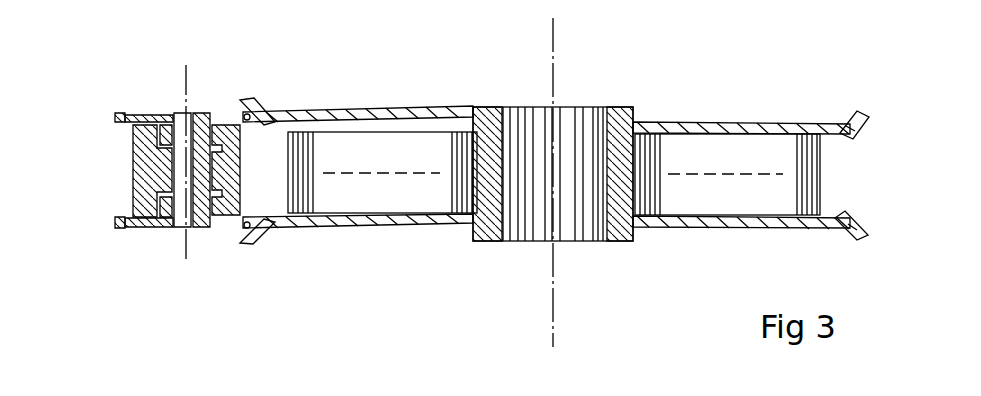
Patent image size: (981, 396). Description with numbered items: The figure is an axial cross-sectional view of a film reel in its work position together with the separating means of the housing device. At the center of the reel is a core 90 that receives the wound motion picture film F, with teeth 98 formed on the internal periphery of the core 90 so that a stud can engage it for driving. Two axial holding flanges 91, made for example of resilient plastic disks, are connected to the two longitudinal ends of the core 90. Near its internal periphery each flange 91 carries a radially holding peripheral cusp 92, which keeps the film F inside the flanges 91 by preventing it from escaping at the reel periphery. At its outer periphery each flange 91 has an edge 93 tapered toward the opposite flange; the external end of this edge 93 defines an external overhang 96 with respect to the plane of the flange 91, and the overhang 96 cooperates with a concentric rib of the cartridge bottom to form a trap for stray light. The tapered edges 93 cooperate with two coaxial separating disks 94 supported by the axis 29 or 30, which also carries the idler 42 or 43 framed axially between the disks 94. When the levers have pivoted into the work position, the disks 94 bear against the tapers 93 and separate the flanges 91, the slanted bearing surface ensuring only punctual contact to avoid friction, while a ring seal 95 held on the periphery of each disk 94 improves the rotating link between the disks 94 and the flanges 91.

The axis 29 is at (155, 134).
The axis 30 is at (181, 113).
The idler 42 is at (114, 171).
The idler 43 is at (148, 165).
The core 90 is at (569, 137).
The axial holding flange 91 is at (698, 126).
The radially holding peripheral cusp 92 is at (262, 218).
The tapered edge 93 is at (871, 170).
The separating disk 94 is at (211, 113).
The ring seal 95 is at (118, 113).
The external overhang 96 is at (853, 118).
The teeth 98 is at (575, 135).
The motion picture film F is at (340, 152).